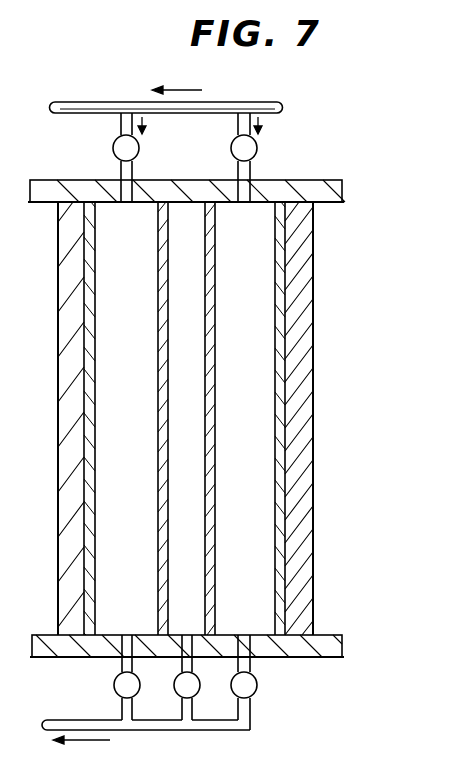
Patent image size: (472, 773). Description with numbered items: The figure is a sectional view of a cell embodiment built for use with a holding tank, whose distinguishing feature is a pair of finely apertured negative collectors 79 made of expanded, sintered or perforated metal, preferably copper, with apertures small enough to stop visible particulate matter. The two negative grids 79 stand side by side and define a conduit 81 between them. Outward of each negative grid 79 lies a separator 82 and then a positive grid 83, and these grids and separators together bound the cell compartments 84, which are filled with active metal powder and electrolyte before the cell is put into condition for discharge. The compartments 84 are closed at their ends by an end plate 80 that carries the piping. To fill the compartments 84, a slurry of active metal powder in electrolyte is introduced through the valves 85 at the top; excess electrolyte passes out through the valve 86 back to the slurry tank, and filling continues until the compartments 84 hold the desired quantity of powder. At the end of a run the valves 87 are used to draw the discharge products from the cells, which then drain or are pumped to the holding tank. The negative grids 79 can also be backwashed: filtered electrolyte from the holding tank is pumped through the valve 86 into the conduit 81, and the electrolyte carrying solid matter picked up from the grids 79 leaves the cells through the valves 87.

The negative collector 79 is at (207, 352).
The end plate 80 is at (186, 191).
The conduit 81 is at (197, 481).
The separator 82 is at (92, 468).
The positive grid 83 is at (65, 530).
The cell compartment 84 is at (133, 571).
The valve 85 is at (139, 150).
The valve 86 is at (220, 682).
The valve 87 is at (114, 686).